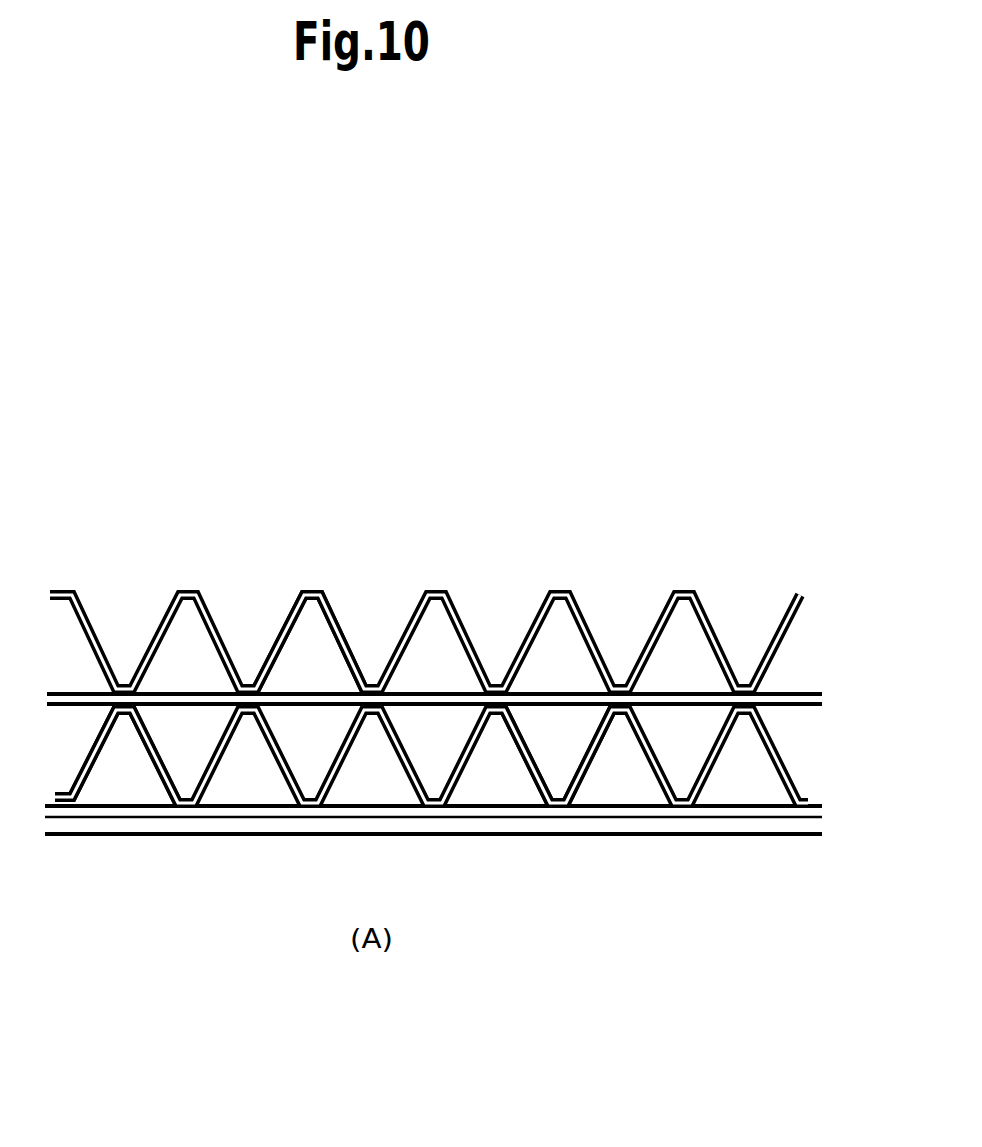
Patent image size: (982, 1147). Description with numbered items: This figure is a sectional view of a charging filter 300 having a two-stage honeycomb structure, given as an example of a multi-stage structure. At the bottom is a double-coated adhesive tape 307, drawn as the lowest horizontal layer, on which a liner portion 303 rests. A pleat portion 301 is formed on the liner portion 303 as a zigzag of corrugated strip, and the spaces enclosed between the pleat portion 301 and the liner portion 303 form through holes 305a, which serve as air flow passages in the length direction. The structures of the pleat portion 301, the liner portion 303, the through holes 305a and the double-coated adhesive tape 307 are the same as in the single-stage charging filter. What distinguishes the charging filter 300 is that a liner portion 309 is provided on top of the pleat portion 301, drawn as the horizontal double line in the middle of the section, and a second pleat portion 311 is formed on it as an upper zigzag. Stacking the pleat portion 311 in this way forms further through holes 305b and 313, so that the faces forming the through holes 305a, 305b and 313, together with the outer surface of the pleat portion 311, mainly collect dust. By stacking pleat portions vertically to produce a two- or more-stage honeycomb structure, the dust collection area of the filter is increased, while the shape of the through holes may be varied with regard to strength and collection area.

The charging filter 300 is at (386, 471).
The pleat portion 301 is at (792, 777).
The liner portion 303 is at (385, 808).
The through holes 305a is at (125, 775).
The through holes 305b is at (565, 743).
The double-coated adhesive tape 307 is at (168, 835).
The liner portion 309 is at (557, 687).
The pleat portion 311 is at (102, 633).
The through holes 313 is at (308, 647).